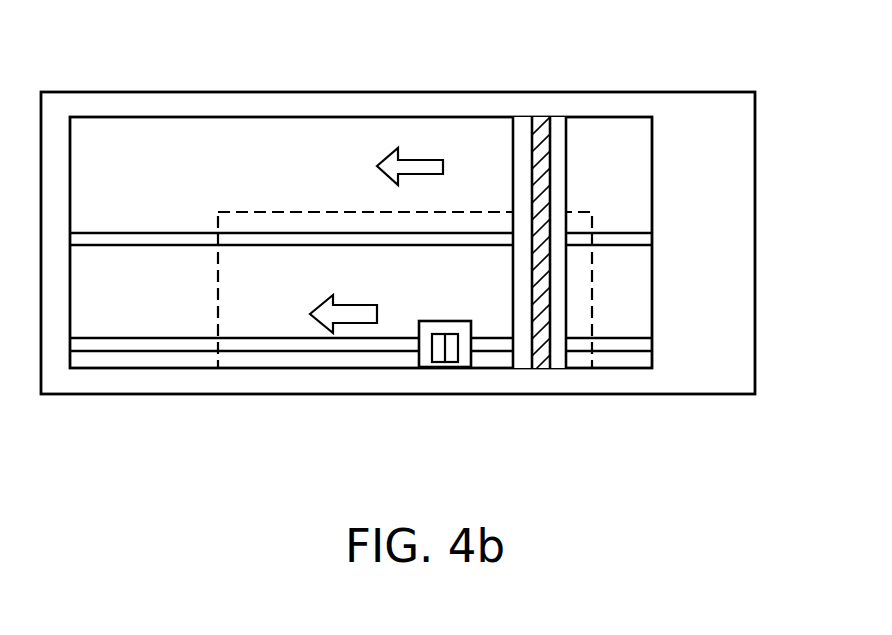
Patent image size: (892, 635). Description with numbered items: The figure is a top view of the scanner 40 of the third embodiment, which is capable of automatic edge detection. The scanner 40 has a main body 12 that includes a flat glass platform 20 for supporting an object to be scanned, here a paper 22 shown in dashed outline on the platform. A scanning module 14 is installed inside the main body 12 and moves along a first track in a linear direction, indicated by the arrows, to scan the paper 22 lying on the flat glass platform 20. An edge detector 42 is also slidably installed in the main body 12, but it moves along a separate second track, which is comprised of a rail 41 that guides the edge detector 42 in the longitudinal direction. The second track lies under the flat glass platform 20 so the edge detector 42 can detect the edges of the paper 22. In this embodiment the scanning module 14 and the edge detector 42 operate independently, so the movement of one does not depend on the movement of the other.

The scanner 40 is at (740, 82).
The main body 12 is at (218, 108).
The flat glass platform 20 is at (143, 135).
The paper 22 is at (332, 218).
The scanning module 14 is at (563, 162).
The rail 41 is at (276, 347).
The edge detector 42 is at (472, 360).